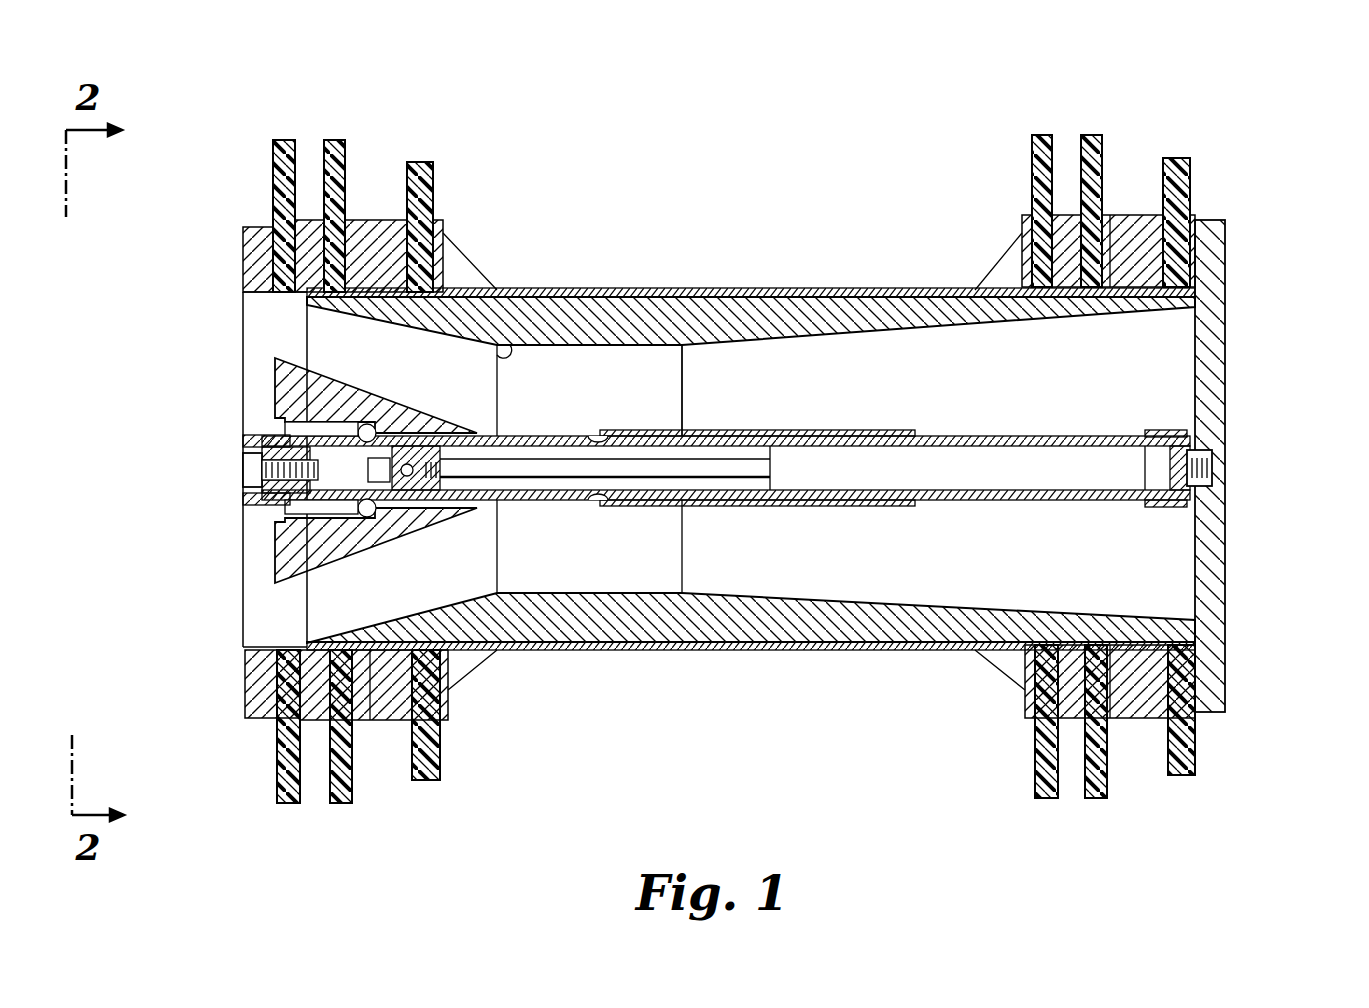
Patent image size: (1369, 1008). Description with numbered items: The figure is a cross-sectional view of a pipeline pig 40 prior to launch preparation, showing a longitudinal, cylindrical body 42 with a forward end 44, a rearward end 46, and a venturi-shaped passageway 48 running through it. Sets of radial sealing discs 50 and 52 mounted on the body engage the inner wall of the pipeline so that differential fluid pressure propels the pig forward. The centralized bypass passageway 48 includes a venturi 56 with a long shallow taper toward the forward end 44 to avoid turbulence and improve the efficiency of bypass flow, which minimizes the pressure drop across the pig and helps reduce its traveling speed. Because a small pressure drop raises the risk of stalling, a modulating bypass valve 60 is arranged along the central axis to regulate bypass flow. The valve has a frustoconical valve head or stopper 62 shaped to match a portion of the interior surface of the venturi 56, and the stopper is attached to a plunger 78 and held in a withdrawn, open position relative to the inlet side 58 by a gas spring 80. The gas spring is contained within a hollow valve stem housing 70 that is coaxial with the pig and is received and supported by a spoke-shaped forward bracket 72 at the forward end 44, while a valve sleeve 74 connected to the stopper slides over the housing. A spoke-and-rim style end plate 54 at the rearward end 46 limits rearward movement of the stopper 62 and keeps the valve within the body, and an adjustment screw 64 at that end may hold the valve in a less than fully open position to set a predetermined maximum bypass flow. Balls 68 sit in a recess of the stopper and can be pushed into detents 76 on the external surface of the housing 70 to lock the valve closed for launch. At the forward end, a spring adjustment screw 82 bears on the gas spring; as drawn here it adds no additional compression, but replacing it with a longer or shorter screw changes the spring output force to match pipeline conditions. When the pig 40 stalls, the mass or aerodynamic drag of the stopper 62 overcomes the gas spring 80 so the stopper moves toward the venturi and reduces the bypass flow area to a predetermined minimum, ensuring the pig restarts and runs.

The pipeline pig 40 is at (722, 266).
The body 42 is at (620, 286).
The forward end 44 is at (1228, 672).
The rearward end 46 is at (245, 278).
The passageway 48 is at (820, 385).
The radial sealing discs 50 is at (1040, 120).
The radial sealing discs 52 is at (376, 129).
The end plate 54 is at (245, 685).
The venturi 56 is at (505, 350).
The inlet side 58 is at (270, 636).
The modulating bypass valve 60 is at (248, 402).
The valve head stopper 62 is at (398, 535).
The adjustment screw 64 is at (246, 462).
The balls 68 is at (368, 424).
The housing 70 is at (1005, 502).
The forward bracket 72 is at (1212, 372).
The valve sleeve 74 is at (718, 432).
The detents 76 is at (600, 436).
The plunger 78 is at (513, 467).
The gas spring 80 is at (973, 460).
The adjustment screw 82 is at (1225, 470).